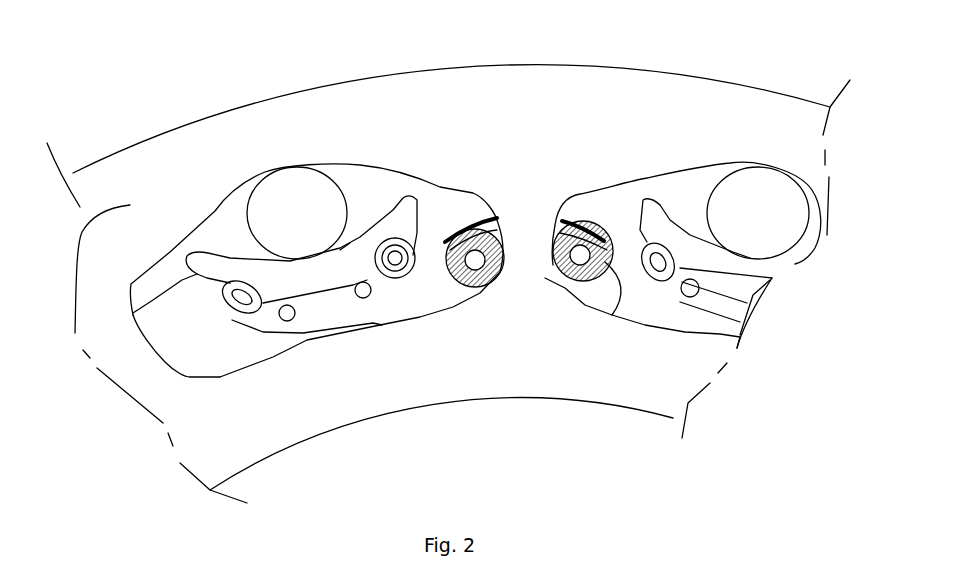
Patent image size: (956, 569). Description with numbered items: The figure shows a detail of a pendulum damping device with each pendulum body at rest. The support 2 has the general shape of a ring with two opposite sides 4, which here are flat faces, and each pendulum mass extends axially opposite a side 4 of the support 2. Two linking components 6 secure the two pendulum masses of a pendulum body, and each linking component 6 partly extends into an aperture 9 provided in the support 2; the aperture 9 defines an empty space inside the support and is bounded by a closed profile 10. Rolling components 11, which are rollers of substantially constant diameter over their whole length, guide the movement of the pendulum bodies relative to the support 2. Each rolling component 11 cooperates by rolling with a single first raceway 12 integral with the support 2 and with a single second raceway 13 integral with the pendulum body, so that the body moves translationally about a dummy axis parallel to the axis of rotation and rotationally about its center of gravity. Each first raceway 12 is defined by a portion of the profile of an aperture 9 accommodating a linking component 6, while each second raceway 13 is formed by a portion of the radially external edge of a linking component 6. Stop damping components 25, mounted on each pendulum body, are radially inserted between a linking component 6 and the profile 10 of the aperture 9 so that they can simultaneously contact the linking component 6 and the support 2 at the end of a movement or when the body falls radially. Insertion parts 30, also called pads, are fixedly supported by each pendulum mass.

The support 2 is at (153, 133).
The side 4 is at (80, 233).
The linking component 6 is at (133, 315).
The aperture 9 is at (375, 197).
The closed profile 10 is at (613, 185).
The rolling component 11 is at (293, 207).
The first raceway 12 is at (347, 161).
The second raceway 13 is at (350, 243).
The stop damping component 25 is at (315, 310).
The insertion part 30 is at (612, 315).